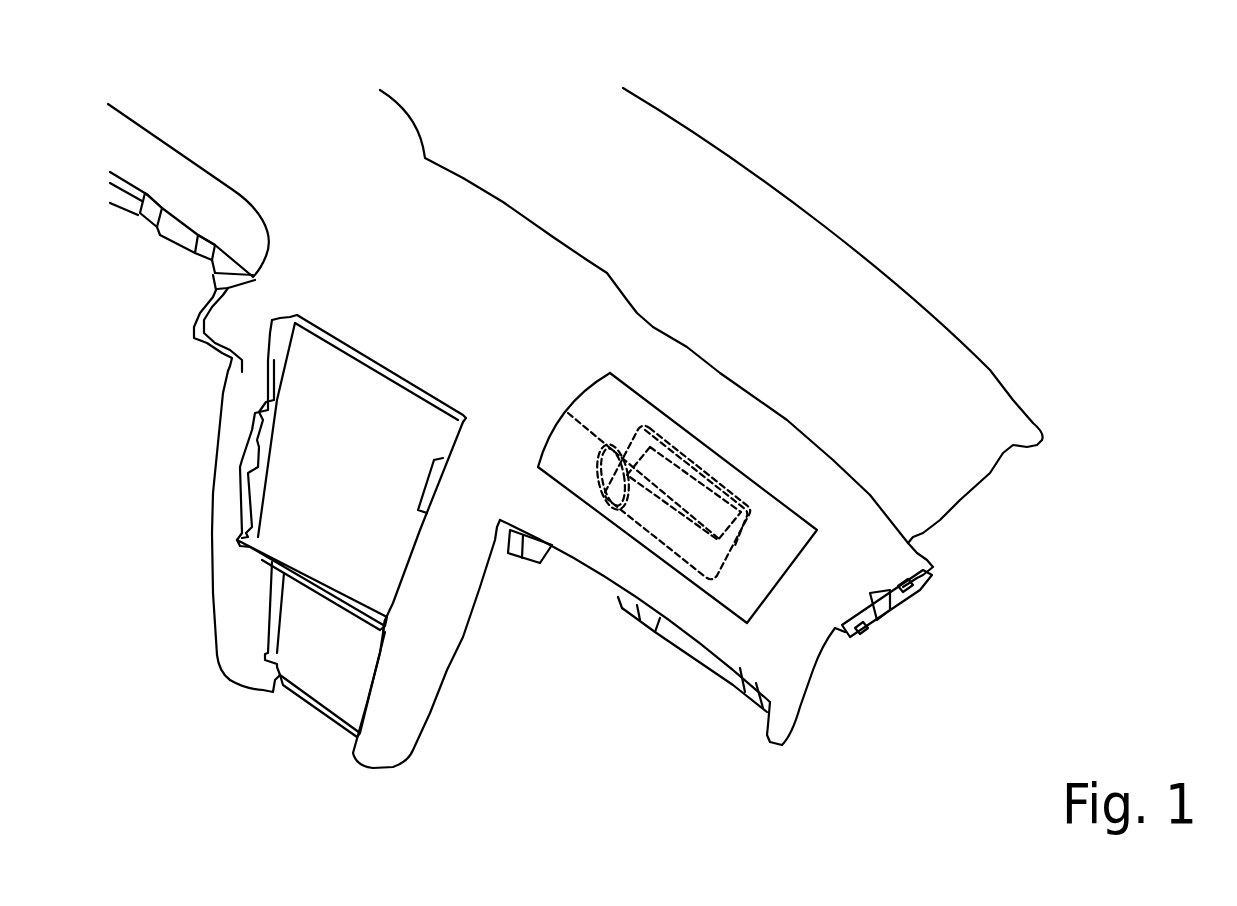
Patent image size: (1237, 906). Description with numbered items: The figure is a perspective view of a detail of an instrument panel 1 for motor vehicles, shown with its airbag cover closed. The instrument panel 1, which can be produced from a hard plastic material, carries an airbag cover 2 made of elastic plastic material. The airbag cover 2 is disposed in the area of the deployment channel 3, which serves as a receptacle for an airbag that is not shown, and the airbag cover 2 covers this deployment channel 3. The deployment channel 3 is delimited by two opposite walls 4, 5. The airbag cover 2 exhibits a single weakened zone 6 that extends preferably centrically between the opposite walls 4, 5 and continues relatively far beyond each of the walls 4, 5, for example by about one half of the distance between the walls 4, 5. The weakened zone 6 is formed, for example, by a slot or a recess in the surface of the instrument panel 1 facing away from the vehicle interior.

The instrument panel 1 is at (671, 364).
The airbag cover 2 is at (783, 534).
The deployment channel 3 is at (670, 505).
The wall 4 is at (619, 466).
The wall 5 is at (725, 557).
The weakened zone 6 is at (602, 437).